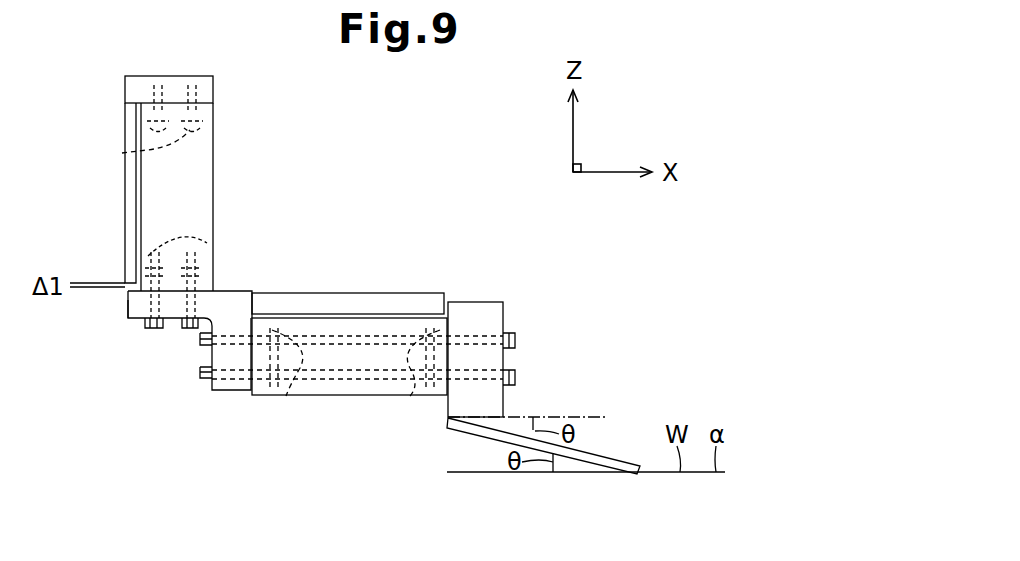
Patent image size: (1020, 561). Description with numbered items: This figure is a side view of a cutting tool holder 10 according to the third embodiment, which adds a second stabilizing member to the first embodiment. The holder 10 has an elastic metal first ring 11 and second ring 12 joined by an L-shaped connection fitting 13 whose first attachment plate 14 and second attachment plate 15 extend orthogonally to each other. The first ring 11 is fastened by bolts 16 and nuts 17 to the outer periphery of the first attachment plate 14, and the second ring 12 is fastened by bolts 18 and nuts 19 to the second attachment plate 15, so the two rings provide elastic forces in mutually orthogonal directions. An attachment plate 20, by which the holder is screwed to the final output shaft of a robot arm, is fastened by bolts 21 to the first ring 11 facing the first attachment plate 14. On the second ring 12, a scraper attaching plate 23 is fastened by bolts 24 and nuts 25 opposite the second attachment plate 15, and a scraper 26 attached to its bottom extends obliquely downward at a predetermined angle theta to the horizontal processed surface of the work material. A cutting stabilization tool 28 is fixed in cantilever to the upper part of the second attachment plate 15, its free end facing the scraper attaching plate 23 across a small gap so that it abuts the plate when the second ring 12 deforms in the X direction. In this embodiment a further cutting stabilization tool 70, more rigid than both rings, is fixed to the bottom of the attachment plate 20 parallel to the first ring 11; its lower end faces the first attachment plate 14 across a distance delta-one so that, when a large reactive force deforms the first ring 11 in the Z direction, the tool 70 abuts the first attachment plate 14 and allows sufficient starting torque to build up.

The cutting tool holder 10 is at (357, 156).
The first ring 11 is at (205, 172).
The second ring 12 is at (333, 395).
The connection fitting 13 is at (228, 292).
The first attachment plate 14 is at (128, 305).
The second attachment plate 15 is at (226, 391).
The bolts 16 is at (185, 332).
The nuts 17 is at (213, 246).
The bolts 18 is at (200, 374).
The nuts 19 is at (287, 398).
The attachment plate 20 is at (213, 88).
The bolts 21 is at (140, 151).
The scraper attaching plate 23 is at (452, 405).
The bolts 24 is at (516, 340).
The nuts 25 is at (411, 391).
The scraper 26 is at (487, 436).
The cutting stabilization tool 28 is at (352, 293).
The cutting stabilization tool 70 is at (125, 216).